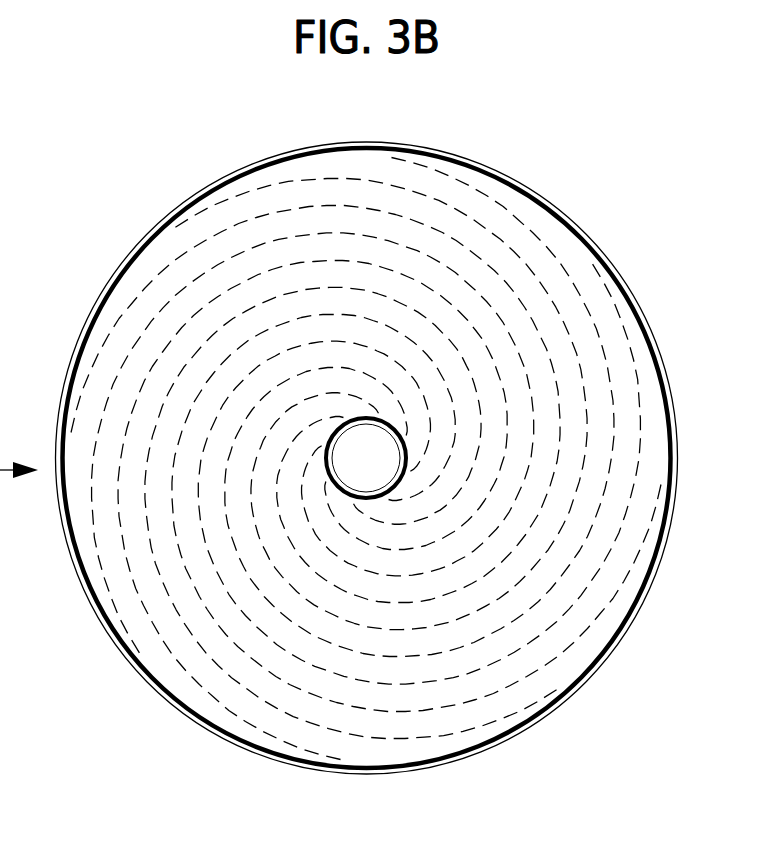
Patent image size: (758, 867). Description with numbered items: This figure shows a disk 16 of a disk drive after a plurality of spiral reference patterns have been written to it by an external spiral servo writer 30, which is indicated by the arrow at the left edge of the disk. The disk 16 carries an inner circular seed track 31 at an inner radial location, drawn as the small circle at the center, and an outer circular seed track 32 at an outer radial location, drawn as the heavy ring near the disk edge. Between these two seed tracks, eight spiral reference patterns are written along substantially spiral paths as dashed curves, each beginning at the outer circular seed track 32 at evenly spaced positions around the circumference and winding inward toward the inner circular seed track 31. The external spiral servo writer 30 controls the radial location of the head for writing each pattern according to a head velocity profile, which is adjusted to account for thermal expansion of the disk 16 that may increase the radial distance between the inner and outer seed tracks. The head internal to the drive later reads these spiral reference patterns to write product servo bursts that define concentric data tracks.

The disk 16 is at (542, 175).
The external spiral servo writer 30 is at (19, 321).
The inner circular seed track 31 is at (355, 422).
The outer circular seed track 32 is at (231, 178).